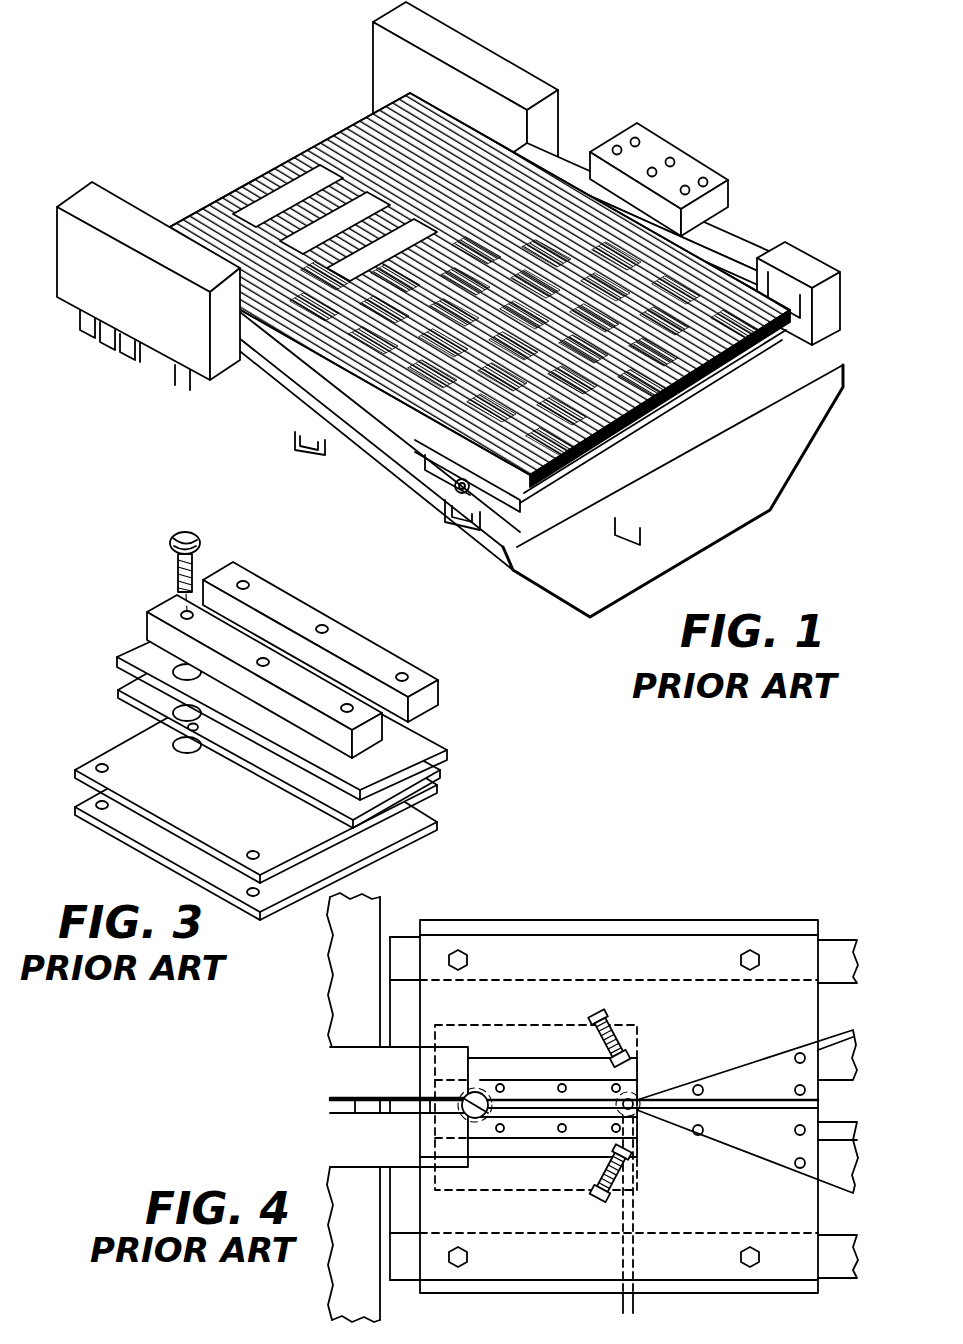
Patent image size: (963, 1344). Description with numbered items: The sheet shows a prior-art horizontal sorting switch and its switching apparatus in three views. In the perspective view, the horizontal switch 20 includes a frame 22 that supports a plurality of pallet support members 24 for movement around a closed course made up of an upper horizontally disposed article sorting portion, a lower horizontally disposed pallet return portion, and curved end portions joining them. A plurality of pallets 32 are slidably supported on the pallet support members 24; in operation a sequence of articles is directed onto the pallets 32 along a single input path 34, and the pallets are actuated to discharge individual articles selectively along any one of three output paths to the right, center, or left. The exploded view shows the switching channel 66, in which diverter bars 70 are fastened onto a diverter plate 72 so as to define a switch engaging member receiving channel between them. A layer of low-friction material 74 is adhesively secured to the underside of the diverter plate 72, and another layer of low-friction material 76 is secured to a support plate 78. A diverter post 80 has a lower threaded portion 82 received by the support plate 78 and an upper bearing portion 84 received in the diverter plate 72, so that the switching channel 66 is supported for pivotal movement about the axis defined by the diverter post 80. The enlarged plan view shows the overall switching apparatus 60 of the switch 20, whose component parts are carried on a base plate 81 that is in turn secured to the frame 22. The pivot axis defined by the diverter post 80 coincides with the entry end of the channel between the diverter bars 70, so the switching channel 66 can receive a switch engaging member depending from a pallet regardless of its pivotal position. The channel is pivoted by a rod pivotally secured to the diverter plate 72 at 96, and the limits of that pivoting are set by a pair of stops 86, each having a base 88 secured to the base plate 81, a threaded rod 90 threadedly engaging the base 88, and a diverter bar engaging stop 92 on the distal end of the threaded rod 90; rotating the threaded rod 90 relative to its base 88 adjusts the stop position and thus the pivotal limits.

In FIG. 1, the horizontal switch 20 is at (340, 100).
In FIG. 1, the frame 22 is at (231, 386).
In FIG. 4, the frame 22 is at (826, 1283).
In FIG. 1, the pallet support members 24 is at (445, 100).
In FIG. 1, the pallets 32 is at (322, 205).
In FIG. 1, the input path 34 is at (205, 147).
In FIG. 4, the switching apparatus 60 is at (500, 1040).
In FIG. 3, the switching channel 66 is at (296, 578).
In FIG. 4, the switching channel 66 is at (530, 1135).
In FIG. 3, the diverter bars 70 is at (300, 683).
In FIG. 4, the diverter bars 70 is at (553, 1138).
In FIG. 3, the diverter plate 72 is at (412, 748).
In FIG. 3, the layer of low-friction material 74 is at (403, 797).
In FIG. 3, the layer of low-friction material 76 is at (122, 757).
In FIG. 3, the support plate 78 is at (122, 820).
In FIG. 3, the diverter post 80 is at (157, 569).
In FIG. 4, the diverter post 80 is at (466, 1098).
In FIG. 4, the base plate 81 is at (818, 1012).
In FIG. 3, the lower threaded portion 82 is at (178, 585).
In FIG. 3, the upper bearing portion 84 is at (171, 543).
In FIG. 4, the stops 86 is at (598, 1017).
In FIG. 4, the base 88 is at (607, 1030).
In FIG. 4, the threaded rod 90 is at (614, 1040).
In FIG. 4, the diverter bar engaging stop 92 is at (626, 1062).
In FIG. 4, the pivotal connection 96 is at (636, 1098).